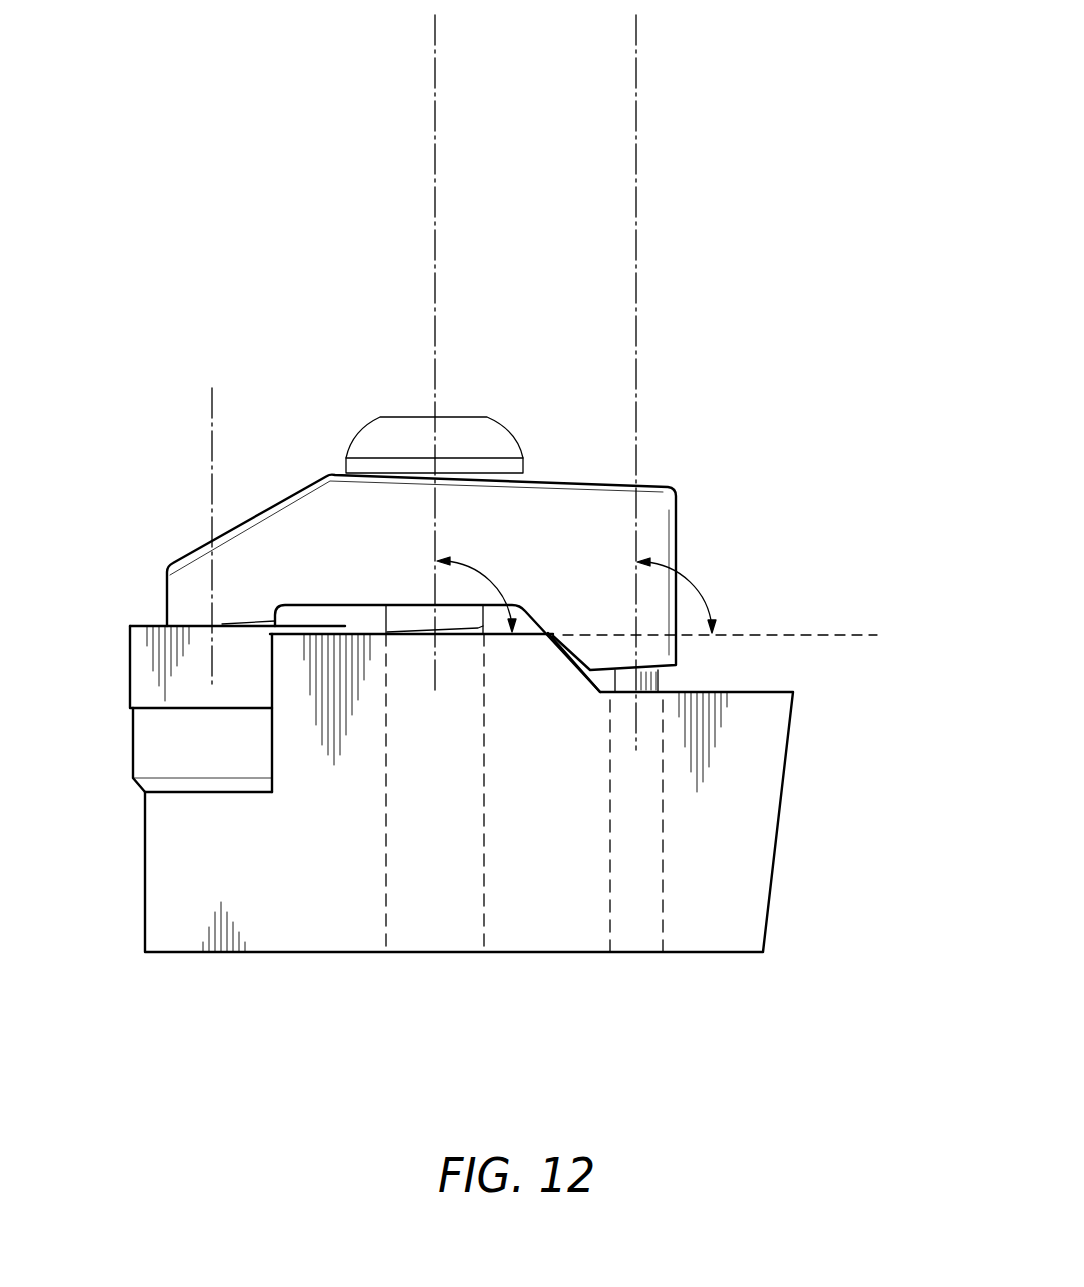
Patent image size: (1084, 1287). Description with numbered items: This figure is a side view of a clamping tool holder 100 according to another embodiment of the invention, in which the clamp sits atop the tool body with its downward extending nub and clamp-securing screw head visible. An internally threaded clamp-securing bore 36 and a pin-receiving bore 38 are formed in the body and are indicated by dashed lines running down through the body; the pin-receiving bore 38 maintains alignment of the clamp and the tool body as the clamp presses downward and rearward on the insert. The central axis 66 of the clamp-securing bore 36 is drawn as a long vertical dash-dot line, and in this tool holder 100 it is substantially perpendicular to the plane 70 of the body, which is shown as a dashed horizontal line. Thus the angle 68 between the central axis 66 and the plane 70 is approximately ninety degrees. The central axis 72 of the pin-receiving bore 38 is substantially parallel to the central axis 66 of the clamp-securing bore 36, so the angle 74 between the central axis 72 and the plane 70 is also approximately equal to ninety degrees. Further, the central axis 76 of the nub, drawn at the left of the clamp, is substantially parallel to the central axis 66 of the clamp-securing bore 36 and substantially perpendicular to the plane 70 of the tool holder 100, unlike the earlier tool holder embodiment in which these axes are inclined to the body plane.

The clamping tool holder 100 is at (143, 388).
The central axis of the clamp-securing bore 66 is at (435, 43).
The central axis of the pin-receiving bore 72 is at (636, 43).
The central axis of the nub 76 is at (212, 480).
The plane of the body 70 is at (857, 634).
The angle 68 is at (486, 578).
The angle 74 is at (686, 578).
The clamp-securing bore 36 is at (495, 908).
The pin-receiving bore 38 is at (670, 908).